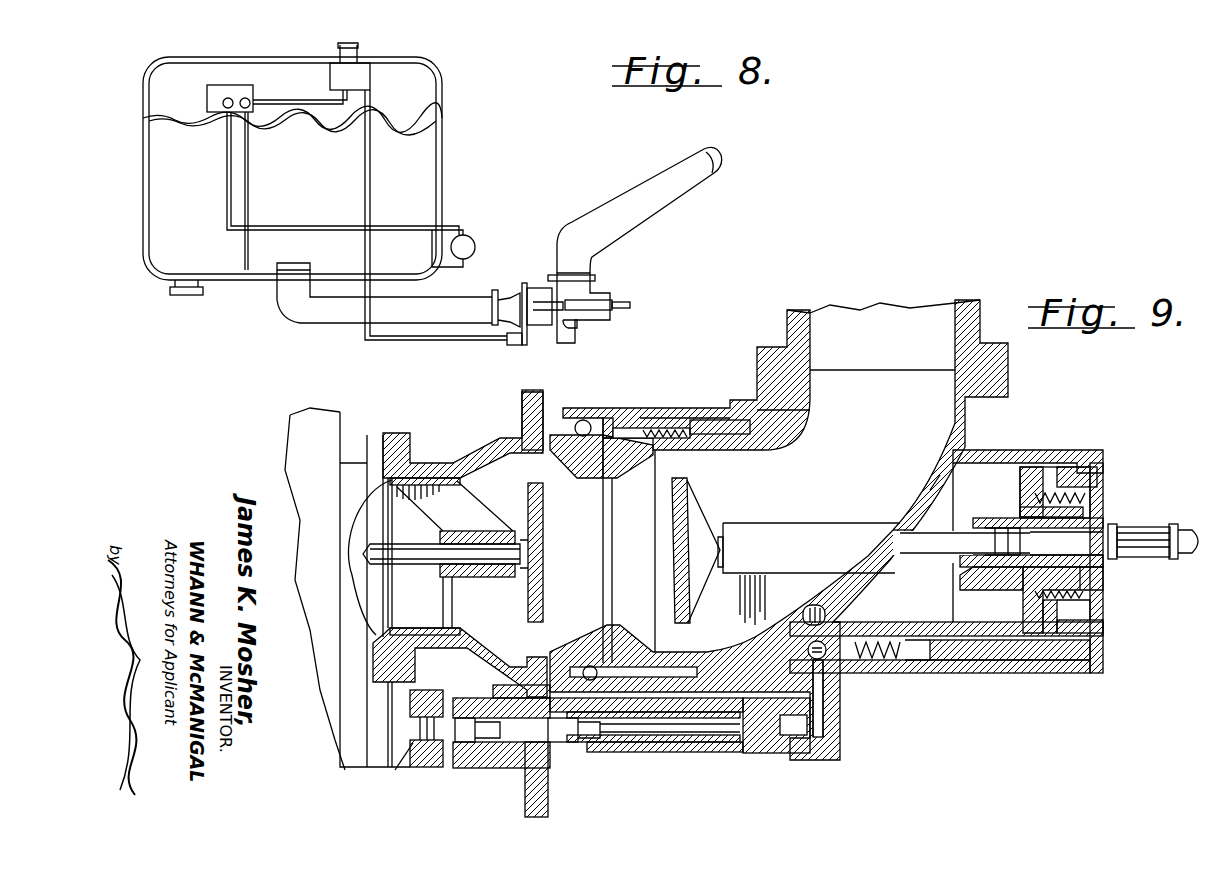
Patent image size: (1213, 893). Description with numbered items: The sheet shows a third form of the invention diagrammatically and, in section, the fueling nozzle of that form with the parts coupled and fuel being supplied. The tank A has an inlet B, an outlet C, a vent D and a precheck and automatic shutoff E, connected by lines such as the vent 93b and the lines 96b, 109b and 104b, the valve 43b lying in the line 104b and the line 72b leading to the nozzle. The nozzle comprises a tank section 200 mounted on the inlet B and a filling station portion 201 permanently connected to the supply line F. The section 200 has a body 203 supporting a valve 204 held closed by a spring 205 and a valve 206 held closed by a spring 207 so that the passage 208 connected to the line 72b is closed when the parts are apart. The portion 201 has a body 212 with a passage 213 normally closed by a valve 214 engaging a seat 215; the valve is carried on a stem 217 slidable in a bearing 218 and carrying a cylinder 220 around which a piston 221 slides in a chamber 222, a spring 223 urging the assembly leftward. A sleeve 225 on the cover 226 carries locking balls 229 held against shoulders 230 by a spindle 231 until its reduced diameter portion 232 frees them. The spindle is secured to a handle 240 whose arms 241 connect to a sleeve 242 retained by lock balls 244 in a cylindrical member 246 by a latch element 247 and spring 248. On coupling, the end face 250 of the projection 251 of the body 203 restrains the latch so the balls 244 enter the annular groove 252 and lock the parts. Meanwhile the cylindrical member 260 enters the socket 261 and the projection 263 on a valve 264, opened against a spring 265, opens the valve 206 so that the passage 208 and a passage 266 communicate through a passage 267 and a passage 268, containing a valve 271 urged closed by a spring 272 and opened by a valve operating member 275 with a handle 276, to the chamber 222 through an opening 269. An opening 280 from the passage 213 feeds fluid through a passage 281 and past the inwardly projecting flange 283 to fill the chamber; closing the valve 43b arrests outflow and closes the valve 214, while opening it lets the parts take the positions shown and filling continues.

In FIG. 8, the tank A is at (440, 170).
In FIG. 8, the inlet B is at (280, 312).
In FIG. 9, the inlet B is at (350, 463).
In FIG. 8, the outlet C is at (185, 298).
In FIG. 8, the vent D is at (360, 78).
In FIG. 8, the precheck and automatic shutoff E is at (207, 92).
In FIG. 8, the supply line F is at (612, 212).
In FIG. 9, the supply line F is at (870, 310).
In FIG. 8, the vent 93b is at (338, 45).
In FIG. 8, the line 96b is at (308, 104).
In FIG. 8, the line 109b is at (250, 194).
In FIG. 8, the line 104b is at (388, 228).
In FIG. 8, the valve 43b is at (472, 240).
In FIG. 8, the line 72b is at (368, 173).
In FIG. 8, the tank section 200 is at (500, 288).
In FIG. 9, the tank section 200 is at (428, 440).
In FIG. 8, the filling station portion 201 is at (532, 284).
In FIG. 9, the body 203 is at (522, 404).
In FIG. 9, the valve 204 is at (535, 548).
In FIG. 9, the spring 205 is at (520, 513).
In FIG. 9, the valve 206 is at (525, 750).
In FIG. 9, the spring 207 is at (505, 750).
In FIG. 9, the passage 208 is at (396, 740).
In FIG. 8, the body 212 is at (595, 283).
In FIG. 9, the body 212 is at (760, 378).
In FIG. 9, the passage 213 is at (890, 402).
In FIG. 9, the valve 214 is at (692, 500).
In FIG. 9, the seat 215 is at (625, 478).
In FIG. 9, the stem 217 is at (902, 530).
In FIG. 9, the bearing 218 is at (795, 530).
In FIG. 9, the cylinder 220 is at (1017, 573).
In FIG. 9, the piston 221 is at (1040, 612).
In FIG. 9, the chamber 222 is at (1057, 467).
In FIG. 9, the spring 223 is at (1095, 480).
In FIG. 9, the sleeve 225 is at (1085, 505).
In FIG. 9, the cover 226 is at (1085, 455).
In FIG. 9, the locking balls 229 is at (1007, 540).
In FIG. 9, the shoulders 230 is at (998, 542).
In FIG. 9, the spindle 231 is at (1098, 540).
In FIG. 9, the reduced diameter portion 232 is at (1000, 550).
In FIG. 8, the handle 240 is at (628, 304).
In FIG. 9, the handle 240 is at (1140, 526).
In FIG. 8, the arms 241 is at (600, 298).
In FIG. 9, the sleeve 242 is at (652, 416).
In FIG. 9, the lock balls 244 is at (577, 420).
In FIG. 9, the cylindrical member 246 is at (610, 415).
In FIG. 9, the latch element 247 is at (660, 423).
In FIG. 9, the spring 248 is at (697, 423).
In FIG. 9, the end face 250 is at (625, 625).
In FIG. 9, the projection 251 is at (606, 560).
In FIG. 9, the annular groove 252 is at (592, 455).
In FIG. 9, the cylindrical member 260 is at (583, 752).
In FIG. 9, the socket 261 is at (560, 775).
In FIG. 9, the projection 263 is at (596, 742).
In FIG. 9, the valve 264 is at (600, 712).
In FIG. 9, the spring 265 is at (660, 742).
In FIG. 9, the passage 266 is at (730, 735).
In FIG. 9, the passage 267 is at (825, 723).
In FIG. 9, the passage 268 is at (920, 660).
In FIG. 9, the opening 269 is at (1090, 640).
In FIG. 9, the valve 271 is at (845, 628).
In FIG. 9, the spring 272 is at (873, 660).
In FIG. 9, the valve operating member 275 is at (828, 640).
In FIG. 8, the handle 276 is at (578, 324).
In FIG. 9, the opening 280 is at (917, 500).
In FIG. 9, the passage 281 is at (1030, 512).
In FIG. 9, the inwardly projecting flange 283 is at (1098, 575).